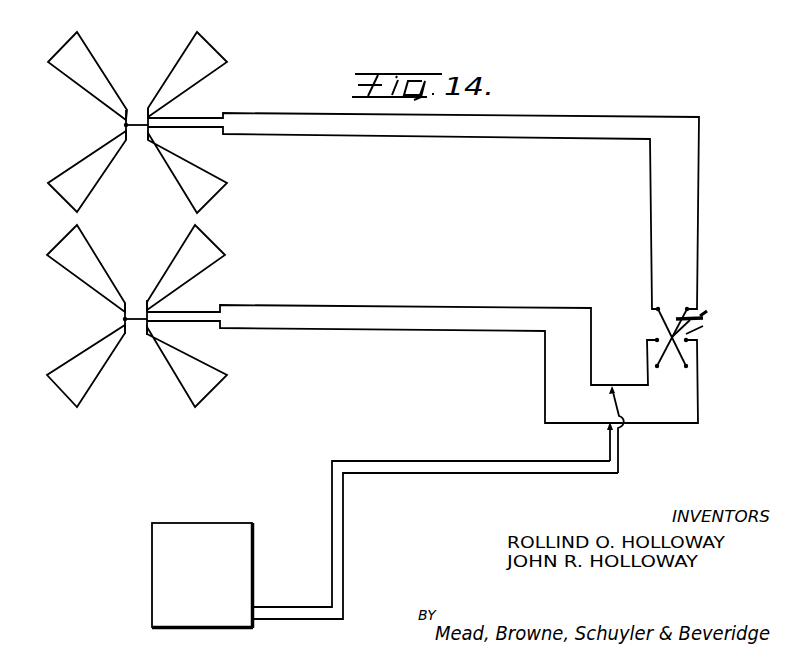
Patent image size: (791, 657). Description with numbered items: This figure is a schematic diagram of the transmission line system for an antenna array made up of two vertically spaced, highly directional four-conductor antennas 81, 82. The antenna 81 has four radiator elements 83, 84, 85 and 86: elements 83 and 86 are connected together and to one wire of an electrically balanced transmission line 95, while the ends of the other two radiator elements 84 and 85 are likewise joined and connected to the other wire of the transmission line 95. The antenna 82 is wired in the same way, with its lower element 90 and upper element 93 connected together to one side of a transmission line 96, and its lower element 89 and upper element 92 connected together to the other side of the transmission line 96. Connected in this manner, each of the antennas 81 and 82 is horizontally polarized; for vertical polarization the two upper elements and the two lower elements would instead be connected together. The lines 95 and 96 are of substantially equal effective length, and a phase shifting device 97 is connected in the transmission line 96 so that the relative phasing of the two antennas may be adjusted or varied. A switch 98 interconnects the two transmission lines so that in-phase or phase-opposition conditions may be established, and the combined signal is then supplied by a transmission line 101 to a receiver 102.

The antenna 81 is at (151, 316).
The antenna 82 is at (153, 122).
The radiator element 83 is at (93, 365).
The radiator element 84 is at (210, 382).
The radiator element 85 is at (205, 250).
The radiator element 86 is at (87, 258).
The lower element 89 is at (205, 192).
The lower element 90 is at (98, 170).
The upper element 92 is at (210, 70).
The upper element 93 is at (80, 71).
The electrically balanced transmission line 95 is at (332, 330).
The transmission line 96 is at (337, 128).
The phase shifting device 97 is at (627, 407).
The switch 98 is at (700, 334).
The transmission line 101 is at (413, 465).
The receiver 102 is at (150, 565).